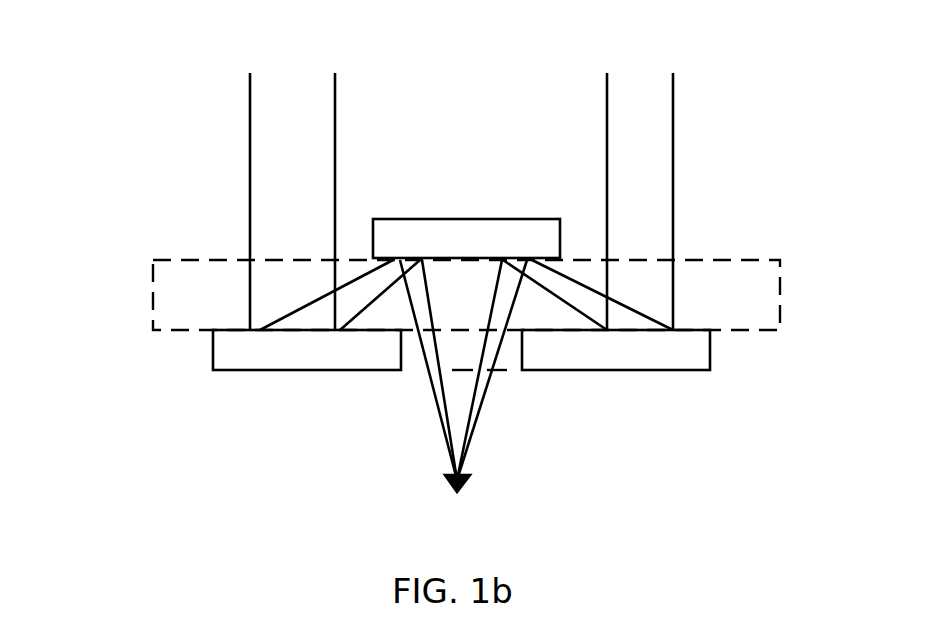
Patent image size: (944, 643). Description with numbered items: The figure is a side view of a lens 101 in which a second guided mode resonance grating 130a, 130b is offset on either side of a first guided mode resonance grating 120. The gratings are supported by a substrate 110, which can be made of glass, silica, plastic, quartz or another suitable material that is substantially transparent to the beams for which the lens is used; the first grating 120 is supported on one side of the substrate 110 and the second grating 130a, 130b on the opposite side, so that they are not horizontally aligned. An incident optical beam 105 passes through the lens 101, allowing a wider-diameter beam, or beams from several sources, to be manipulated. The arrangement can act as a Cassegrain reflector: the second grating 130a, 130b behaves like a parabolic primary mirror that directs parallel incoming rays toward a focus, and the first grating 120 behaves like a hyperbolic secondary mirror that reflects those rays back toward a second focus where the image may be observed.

The lens 101 is at (764, 112).
The incident optical beam 105 is at (250, 121).
The substrate 110 is at (153, 283).
The first guided mode resonance grating 120 is at (490, 219).
The second guided mode resonance grating 130a is at (213, 357).
The second guided mode resonance grating 130b is at (710, 346).